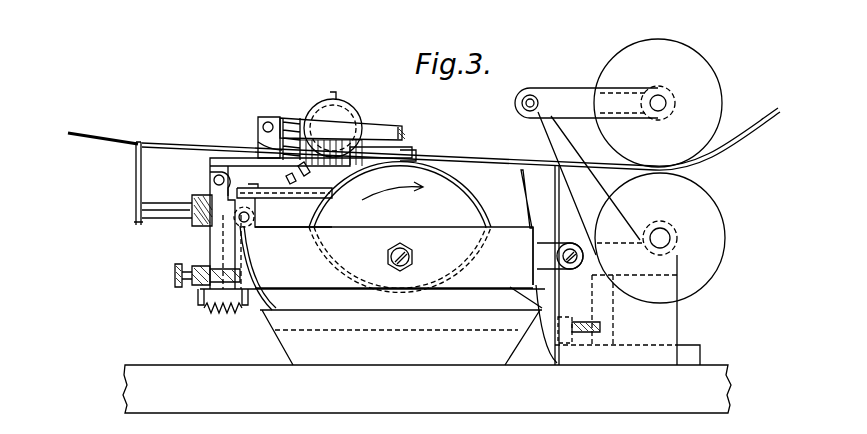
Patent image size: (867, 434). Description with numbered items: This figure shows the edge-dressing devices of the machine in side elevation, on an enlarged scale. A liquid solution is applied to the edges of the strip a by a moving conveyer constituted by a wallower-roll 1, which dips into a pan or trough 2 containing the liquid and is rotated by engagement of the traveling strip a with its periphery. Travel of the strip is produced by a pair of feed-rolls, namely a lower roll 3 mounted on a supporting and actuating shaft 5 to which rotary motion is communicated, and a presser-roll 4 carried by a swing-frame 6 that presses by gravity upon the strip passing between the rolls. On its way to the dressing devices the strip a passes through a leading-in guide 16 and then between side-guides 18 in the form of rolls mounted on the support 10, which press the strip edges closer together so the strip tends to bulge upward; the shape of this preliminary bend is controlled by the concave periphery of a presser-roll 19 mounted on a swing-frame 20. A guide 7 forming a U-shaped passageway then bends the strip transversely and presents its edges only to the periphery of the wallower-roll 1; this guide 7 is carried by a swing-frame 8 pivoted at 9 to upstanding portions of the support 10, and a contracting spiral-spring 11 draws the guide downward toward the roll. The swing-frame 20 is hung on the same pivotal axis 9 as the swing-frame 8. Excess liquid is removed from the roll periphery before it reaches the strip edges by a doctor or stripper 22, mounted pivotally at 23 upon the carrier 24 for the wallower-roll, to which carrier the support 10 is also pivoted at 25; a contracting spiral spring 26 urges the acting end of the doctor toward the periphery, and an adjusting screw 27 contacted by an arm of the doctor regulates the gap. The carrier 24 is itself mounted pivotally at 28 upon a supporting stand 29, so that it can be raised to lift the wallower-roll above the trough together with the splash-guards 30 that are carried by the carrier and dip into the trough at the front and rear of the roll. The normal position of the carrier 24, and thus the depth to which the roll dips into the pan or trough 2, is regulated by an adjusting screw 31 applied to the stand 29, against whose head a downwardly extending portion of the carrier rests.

The wallower-roll 1 is at (463, 198).
The pan or trough 2 is at (282, 348).
The lower feed-roll 3 is at (712, 224).
The presser-roll 4 is at (692, 62).
The supporting and actuating shaft 5 is at (667, 243).
The swing-frame 6 is at (556, 94).
The guide 7 is at (405, 148).
The swing-frame 8 is at (372, 128).
The pivot 9 is at (266, 120).
The support 10 is at (231, 158).
The contracting spiral-spring 11 is at (280, 148).
The leading-in guide 16 is at (140, 141).
The side-guides 18 is at (308, 161).
The presser-roll 19 is at (334, 101).
The swing-frame 20 is at (300, 116).
The doctor or stripper 22 is at (333, 92).
The pivot 23 is at (240, 219).
The carrier 24 is at (366, 234).
The pivot 25 is at (212, 182).
The contracting spiral spring 26 is at (232, 312).
The adjusting screw 27 is at (172, 274).
The pivot 28 is at (563, 246).
The supporting stand 29 is at (670, 327).
The splash-guards 30 is at (561, 302).
The adjusting screw 31 is at (565, 349).
The strip a is at (74, 141).